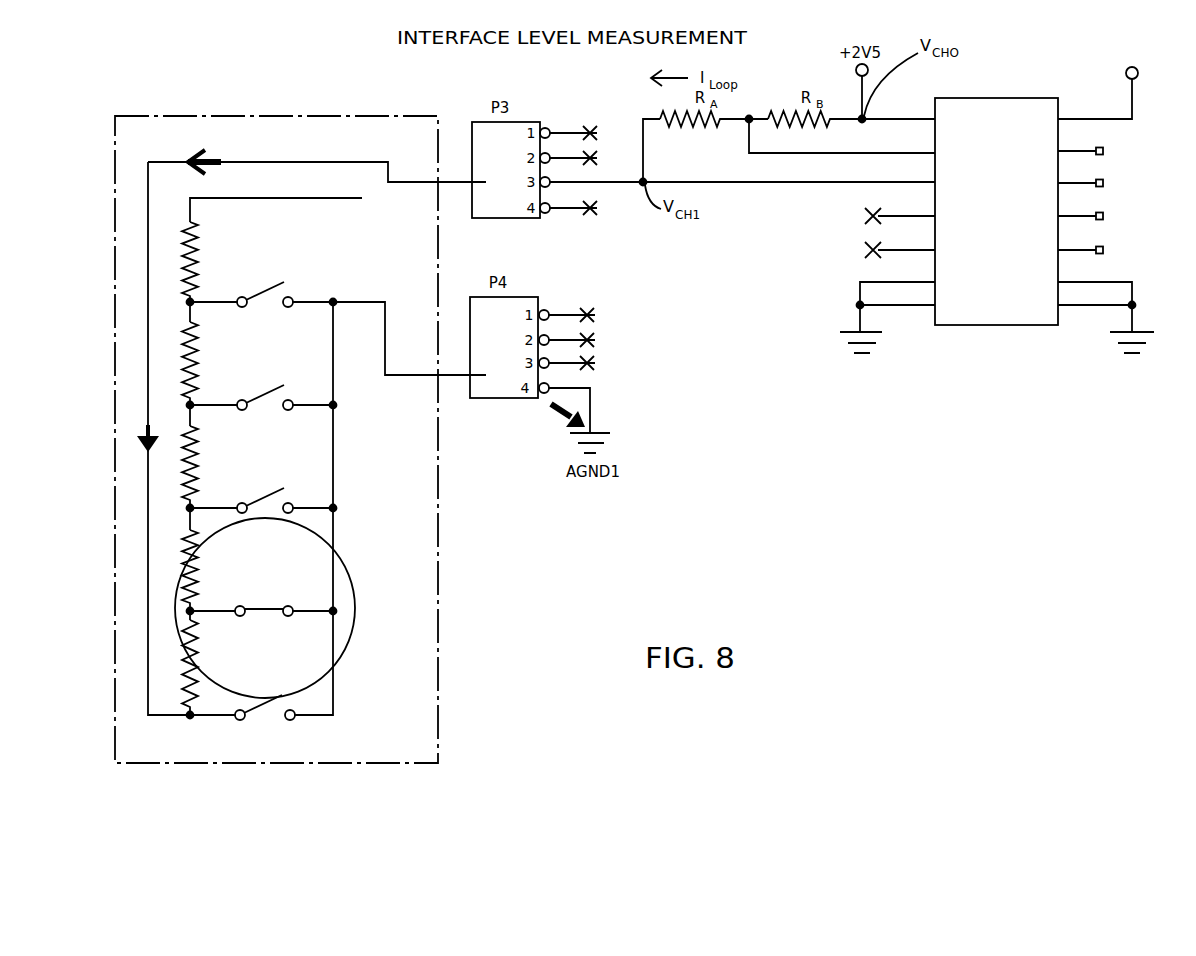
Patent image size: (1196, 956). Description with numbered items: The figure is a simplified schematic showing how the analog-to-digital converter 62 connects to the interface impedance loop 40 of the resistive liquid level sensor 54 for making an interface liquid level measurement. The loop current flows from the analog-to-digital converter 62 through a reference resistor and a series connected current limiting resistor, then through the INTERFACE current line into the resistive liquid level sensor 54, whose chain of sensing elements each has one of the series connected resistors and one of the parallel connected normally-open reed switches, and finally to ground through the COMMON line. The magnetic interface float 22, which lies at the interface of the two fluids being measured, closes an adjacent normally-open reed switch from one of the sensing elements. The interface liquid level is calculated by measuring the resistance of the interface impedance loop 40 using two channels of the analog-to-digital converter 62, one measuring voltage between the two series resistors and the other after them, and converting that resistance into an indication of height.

The magnetic interface float 22 is at (349, 568).
The interface impedance loop 40 is at (336, 487).
The resistive liquid level sensor 54 is at (106, 719).
The analog-to-digital converter 62 is at (993, 98).